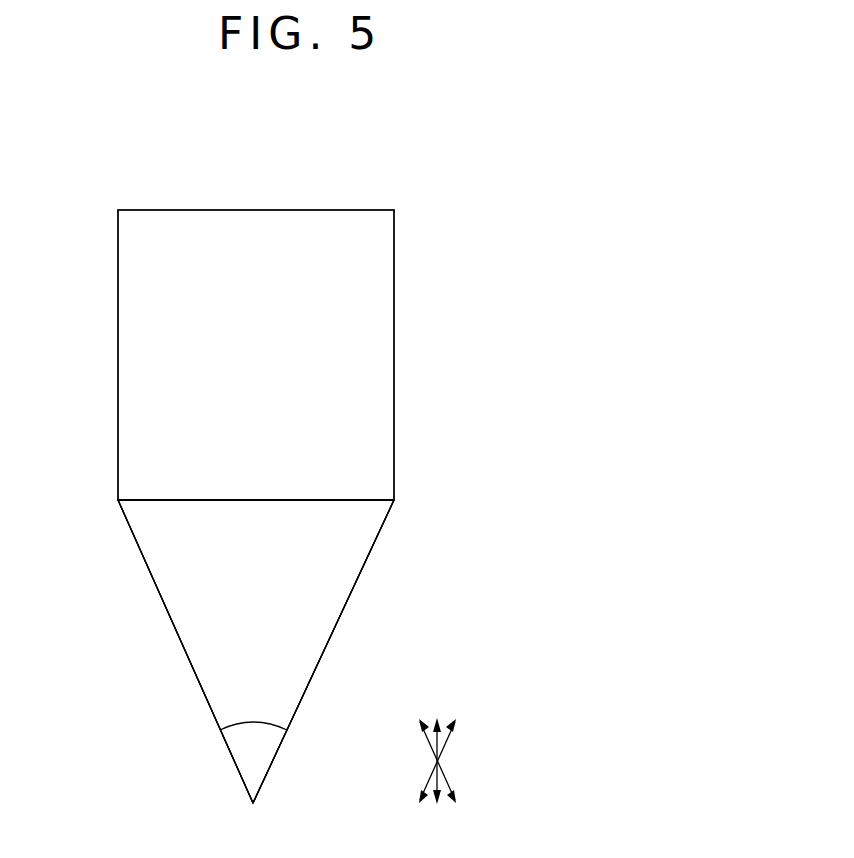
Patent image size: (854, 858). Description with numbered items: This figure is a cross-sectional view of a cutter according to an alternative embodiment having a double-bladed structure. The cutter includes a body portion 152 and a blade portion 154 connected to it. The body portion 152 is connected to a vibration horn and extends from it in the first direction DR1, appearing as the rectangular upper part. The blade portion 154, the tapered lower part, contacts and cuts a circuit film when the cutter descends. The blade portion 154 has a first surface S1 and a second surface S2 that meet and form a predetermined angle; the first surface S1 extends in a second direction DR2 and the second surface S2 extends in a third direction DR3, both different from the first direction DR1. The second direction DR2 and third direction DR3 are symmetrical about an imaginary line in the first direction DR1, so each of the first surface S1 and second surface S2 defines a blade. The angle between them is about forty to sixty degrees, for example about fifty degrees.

The body portion 152 is at (123, 421).
The blade portion 154 is at (162, 556).
The first surface S1 is at (183, 650).
The second surface S2 is at (327, 650).
The first direction DR1 is at (436, 773).
The second direction DR2 is at (459, 774).
The third direction DR3 is at (414, 774).